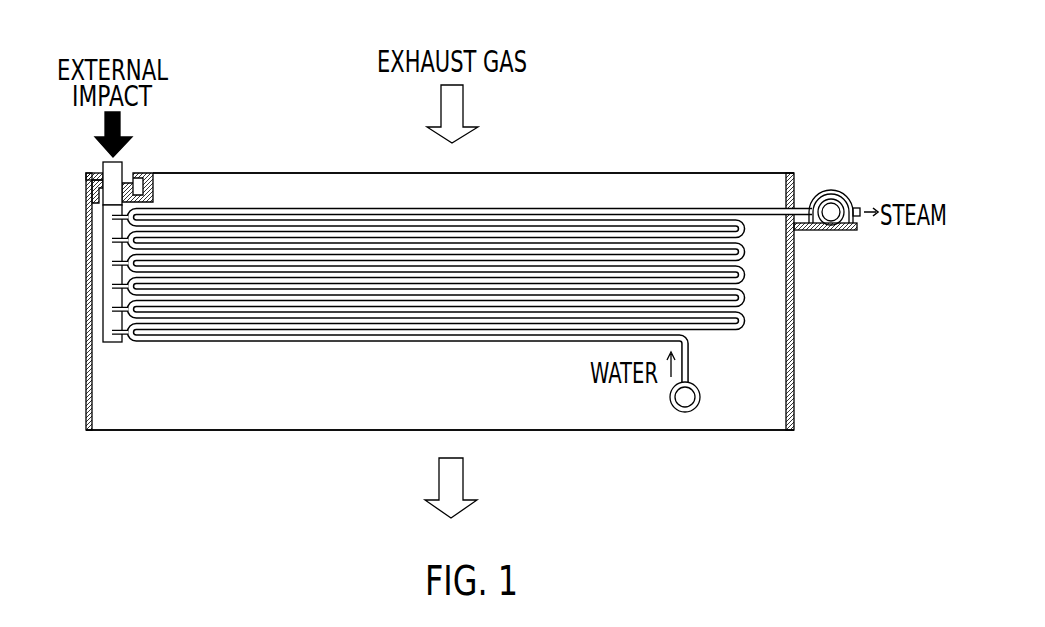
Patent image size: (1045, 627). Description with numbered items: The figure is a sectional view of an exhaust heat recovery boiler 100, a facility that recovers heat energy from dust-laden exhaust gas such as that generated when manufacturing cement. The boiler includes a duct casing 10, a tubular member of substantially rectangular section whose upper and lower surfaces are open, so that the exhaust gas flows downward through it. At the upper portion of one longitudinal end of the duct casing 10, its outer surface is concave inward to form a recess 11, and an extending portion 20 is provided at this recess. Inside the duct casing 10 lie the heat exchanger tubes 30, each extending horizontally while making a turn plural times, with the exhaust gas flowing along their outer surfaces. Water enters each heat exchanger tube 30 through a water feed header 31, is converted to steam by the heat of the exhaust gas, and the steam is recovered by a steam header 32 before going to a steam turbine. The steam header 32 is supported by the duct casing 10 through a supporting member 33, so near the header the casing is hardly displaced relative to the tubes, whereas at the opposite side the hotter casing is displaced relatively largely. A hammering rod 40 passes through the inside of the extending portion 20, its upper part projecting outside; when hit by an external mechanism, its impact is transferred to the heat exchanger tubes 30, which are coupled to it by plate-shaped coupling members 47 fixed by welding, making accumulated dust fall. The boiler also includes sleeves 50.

The exhaust heat recovery boiler 100 is at (273, 133).
The duct casing 10 is at (90, 342).
The recess 11 is at (140, 180).
The extending portion 20 is at (96, 190).
The heat exchanger tube 30 is at (660, 207).
The water feed header 31 is at (684, 413).
The steam header 32 is at (846, 198).
The supporting member 33 is at (827, 225).
The hammering rod 40 is at (103, 262).
The coupling member 47 is at (127, 344).
The sleeve 50 is at (92, 179).